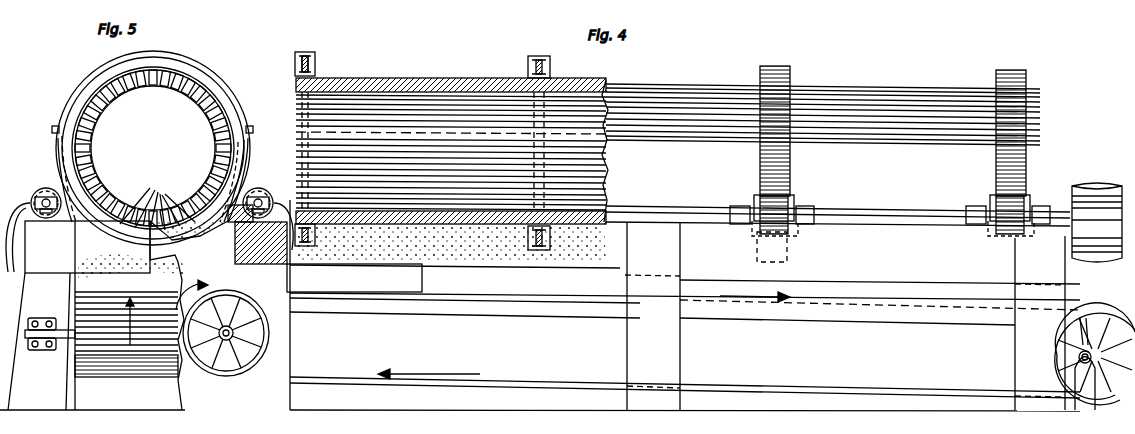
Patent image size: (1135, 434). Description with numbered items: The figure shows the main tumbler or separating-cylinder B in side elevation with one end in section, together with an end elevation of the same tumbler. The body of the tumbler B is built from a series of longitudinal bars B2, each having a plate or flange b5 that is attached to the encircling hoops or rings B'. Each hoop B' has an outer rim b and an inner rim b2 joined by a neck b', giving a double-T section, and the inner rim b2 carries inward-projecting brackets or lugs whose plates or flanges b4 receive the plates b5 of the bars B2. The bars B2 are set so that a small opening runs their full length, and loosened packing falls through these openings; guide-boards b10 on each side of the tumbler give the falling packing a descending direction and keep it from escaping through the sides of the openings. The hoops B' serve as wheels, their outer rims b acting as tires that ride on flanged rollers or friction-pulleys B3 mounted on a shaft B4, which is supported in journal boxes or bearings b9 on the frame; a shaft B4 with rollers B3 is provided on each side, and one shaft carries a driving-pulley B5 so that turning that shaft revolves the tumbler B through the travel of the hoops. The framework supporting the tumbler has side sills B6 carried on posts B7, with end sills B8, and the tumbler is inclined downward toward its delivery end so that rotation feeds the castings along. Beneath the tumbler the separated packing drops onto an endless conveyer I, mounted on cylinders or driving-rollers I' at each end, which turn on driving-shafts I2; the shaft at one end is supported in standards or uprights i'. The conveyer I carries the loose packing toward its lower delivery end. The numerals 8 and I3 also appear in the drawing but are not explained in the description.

In FIG. 4, the main tumbler or separating-cylinder B is at (668, 137).
In FIG. 5, the encircling hoops or rings B' is at (153, 142).
In FIG. 4, the encircling hoops or rings B' is at (660, 233).
In FIG. 5, the longitudinal bars B2 is at (96, 120).
In FIG. 4, the longitudinal bars B2 is at (484, 80).
In FIG. 5, the flanged rollers or friction-pulleys B3 is at (40, 188).
In FIG. 4, the flanged rollers or friction-pulleys B3 is at (790, 196).
In FIG. 5, the shaft B4 is at (22, 200).
In FIG. 4, the shaft B4 is at (680, 192).
In FIG. 4, the driving-pulley B5 is at (1088, 178).
In FIG. 4, the side sills B6 is at (706, 254).
In FIG. 5, the posts B7 is at (254, 394).
In FIG. 4, the posts B7 is at (846, 316).
In FIG. 5, the end sills B8 is at (236, 250).
In FIG. 5, the outer rim b is at (164, 148).
In FIG. 4, the outer rim b is at (440, 163).
In FIG. 5, the neck b' is at (158, 145).
In FIG. 4, the neck b' is at (560, 50).
In FIG. 5, the inner rim b2 is at (212, 105).
In FIG. 4, the inner rim b2 is at (550, 72).
In FIG. 5, the plate or flange b4 is at (172, 88).
In FIG. 5, the plate or flange b5 is at (108, 212).
In FIG. 4, the journal boxes or bearings b9 is at (736, 206).
In FIG. 5, the guide-boards b10 is at (52, 129).
In FIG. 4, the guide-boards b10 is at (780, 158).
In FIG. 5, the radial partitions 8 is at (157, 204).
In FIG. 5, the endless conveyer I is at (126, 349).
In FIG. 4, the endless conveyer I is at (619, 308).
In FIG. 5, the cylinders or driving-rollers I' is at (222, 341).
In FIG. 4, the cylinders or driving-rollers I' is at (1095, 351).
In FIG. 5, the driving-shafts I2 is at (40, 352).
In FIG. 4, the driving-shafts I2 is at (288, 320).
In FIG. 4, the pulley support I3 is at (1080, 318).
In FIG. 4, the standards or uprights i' is at (1086, 378).